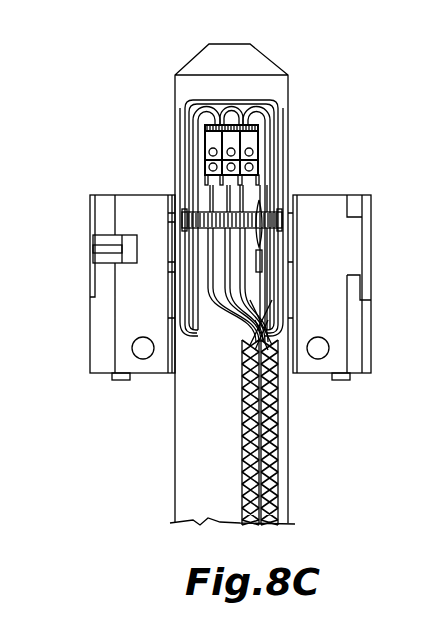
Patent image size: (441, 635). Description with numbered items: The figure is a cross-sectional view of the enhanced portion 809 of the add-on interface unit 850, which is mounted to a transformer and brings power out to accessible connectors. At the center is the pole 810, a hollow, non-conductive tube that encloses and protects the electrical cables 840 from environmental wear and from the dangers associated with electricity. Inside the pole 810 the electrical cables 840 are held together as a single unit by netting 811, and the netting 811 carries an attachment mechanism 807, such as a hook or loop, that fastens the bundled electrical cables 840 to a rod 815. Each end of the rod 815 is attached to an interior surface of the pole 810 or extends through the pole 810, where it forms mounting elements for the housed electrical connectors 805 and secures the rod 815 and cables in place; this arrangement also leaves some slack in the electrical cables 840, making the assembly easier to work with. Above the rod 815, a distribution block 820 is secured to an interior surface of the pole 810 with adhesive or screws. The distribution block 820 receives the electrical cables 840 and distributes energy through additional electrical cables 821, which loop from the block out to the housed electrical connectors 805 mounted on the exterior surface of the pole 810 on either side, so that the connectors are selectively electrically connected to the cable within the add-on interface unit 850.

The housed electrical connectors 805 is at (230, 287).
The attachment mechanism 807 is at (262, 265).
The enhanced portion 809 is at (186, 212).
The pole 810 is at (288, 97).
The netting 811 is at (275, 407).
The rod 815 is at (227, 212).
The distribution block 820 is at (258, 128).
The additional electrical cables 821 is at (188, 100).
The electrical cables 840 is at (273, 455).
The add-on interface unit 850 is at (175, 455).